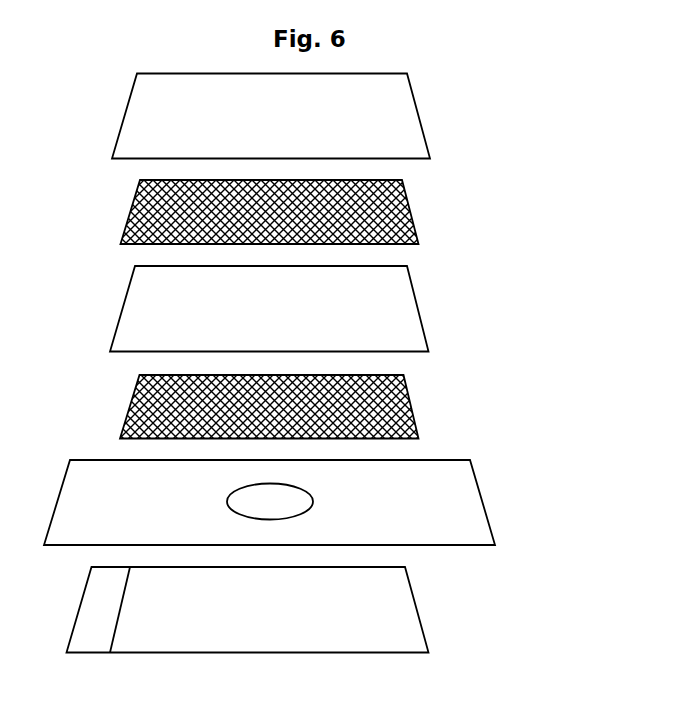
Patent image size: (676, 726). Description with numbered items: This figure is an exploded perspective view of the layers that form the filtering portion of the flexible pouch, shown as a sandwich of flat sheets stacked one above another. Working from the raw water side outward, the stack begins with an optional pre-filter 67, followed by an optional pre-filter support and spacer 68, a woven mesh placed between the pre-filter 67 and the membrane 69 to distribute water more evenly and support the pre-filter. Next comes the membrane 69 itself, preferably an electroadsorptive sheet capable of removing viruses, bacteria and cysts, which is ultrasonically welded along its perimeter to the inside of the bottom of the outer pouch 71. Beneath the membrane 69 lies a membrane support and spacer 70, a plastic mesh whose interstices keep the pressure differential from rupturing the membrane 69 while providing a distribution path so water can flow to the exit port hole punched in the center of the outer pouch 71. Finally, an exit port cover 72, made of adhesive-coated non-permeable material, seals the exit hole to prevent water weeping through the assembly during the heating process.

The pre-filter 67 is at (412, 97).
The pre-filter support and spacer 68 is at (407, 202).
The membrane 69 is at (412, 290).
The membrane support and spacer 70 is at (410, 395).
The outer pouch 71 is at (478, 488).
The exit port cover 72 is at (417, 598).